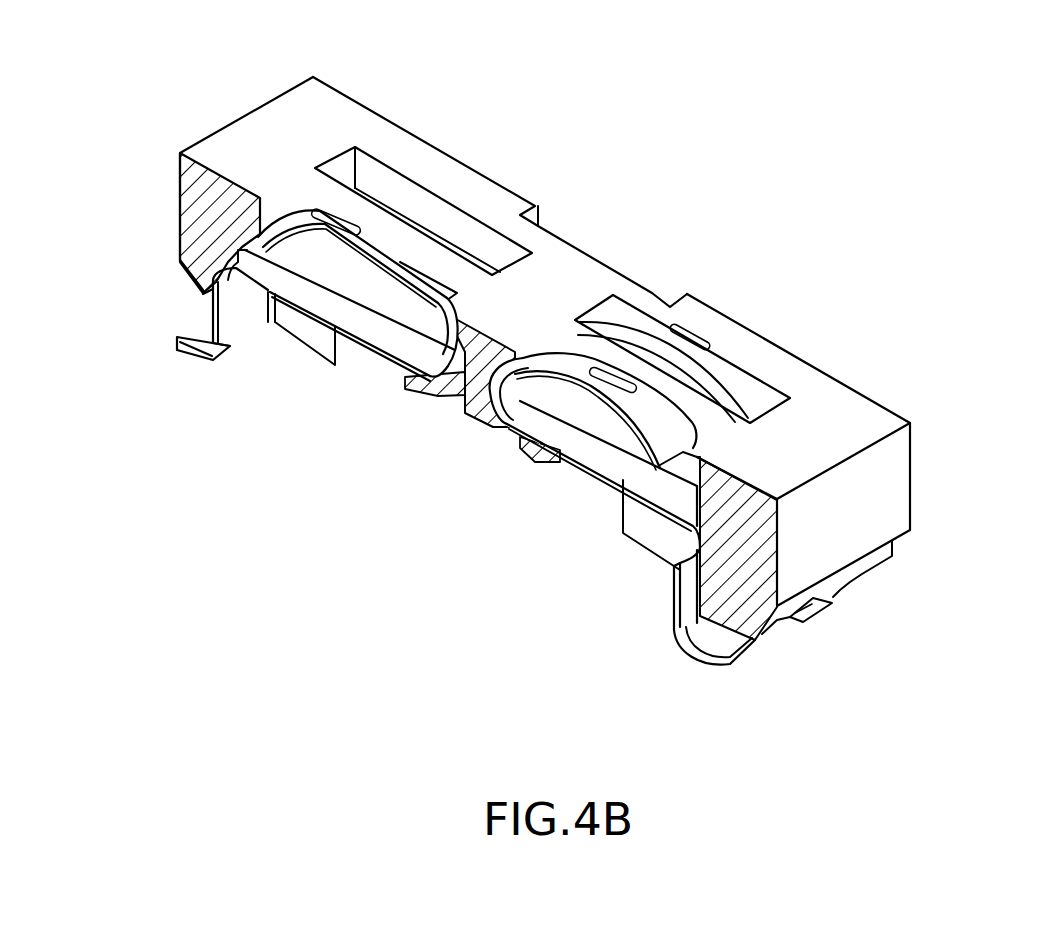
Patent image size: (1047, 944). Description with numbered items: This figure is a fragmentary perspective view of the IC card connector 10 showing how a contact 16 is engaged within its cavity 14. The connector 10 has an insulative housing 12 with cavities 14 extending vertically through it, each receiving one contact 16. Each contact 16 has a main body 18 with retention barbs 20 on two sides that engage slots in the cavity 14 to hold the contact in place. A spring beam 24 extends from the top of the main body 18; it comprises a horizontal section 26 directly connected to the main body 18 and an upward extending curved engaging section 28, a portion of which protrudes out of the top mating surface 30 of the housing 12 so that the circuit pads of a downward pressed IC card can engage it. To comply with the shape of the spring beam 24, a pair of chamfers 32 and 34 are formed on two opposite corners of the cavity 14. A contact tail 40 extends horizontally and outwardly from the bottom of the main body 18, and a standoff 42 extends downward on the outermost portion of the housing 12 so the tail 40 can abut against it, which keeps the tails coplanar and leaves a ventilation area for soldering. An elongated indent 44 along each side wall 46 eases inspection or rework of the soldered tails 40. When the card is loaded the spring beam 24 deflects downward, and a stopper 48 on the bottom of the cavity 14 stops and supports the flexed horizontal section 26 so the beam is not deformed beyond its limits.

The IC card connector 10 is at (951, 284).
The insulative housing 12 is at (330, 107).
The cavity 14 is at (495, 252).
The contact 16 is at (745, 372).
The main body 18 is at (238, 313).
The retention barb 20 is at (197, 350).
The spring beam 24 is at (438, 409).
The horizontal section 26 is at (385, 335).
The engaging section 28 is at (388, 255).
The top mating surface 30 is at (831, 439).
The chamfer 32 is at (428, 380).
The chamfer 34 is at (270, 292).
The contact tail 40 is at (737, 650).
The standoff 42 is at (763, 627).
The elongated indent 44 is at (184, 272).
The side wall 46 is at (197, 183).
The stopper 48 is at (425, 392).